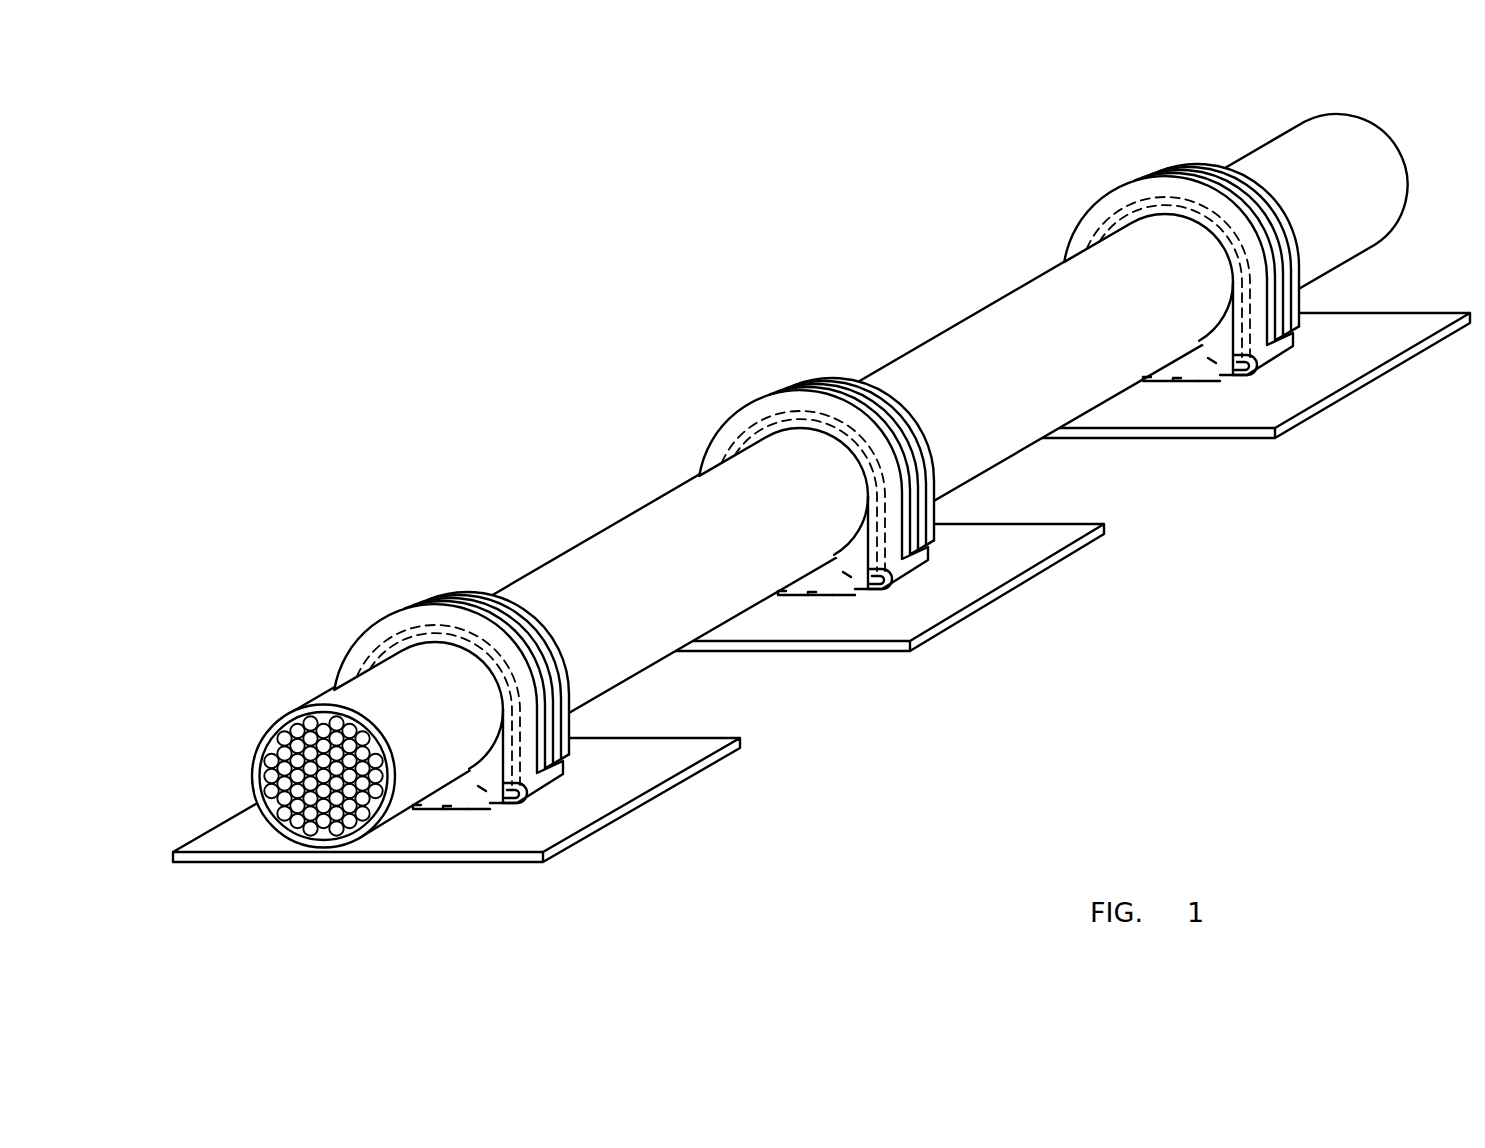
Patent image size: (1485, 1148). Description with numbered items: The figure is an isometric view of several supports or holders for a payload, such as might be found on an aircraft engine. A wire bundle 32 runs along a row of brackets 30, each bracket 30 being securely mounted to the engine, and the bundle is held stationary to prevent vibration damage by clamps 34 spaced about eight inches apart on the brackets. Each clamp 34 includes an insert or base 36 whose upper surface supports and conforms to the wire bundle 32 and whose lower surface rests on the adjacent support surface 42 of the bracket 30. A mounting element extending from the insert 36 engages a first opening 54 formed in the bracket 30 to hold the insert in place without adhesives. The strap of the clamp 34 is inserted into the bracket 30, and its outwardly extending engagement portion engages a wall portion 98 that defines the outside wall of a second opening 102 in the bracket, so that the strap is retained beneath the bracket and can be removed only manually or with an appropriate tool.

The bracket 30 is at (577, 838).
The wire bundle 32 is at (990, 303).
The clamp 34 is at (395, 582).
The insert 36 is at (490, 806).
The adjacent support surface 42 is at (456, 810).
The first opening 54 is at (422, 808).
The wall portion 98 is at (503, 805).
The second opening 102 is at (483, 790).